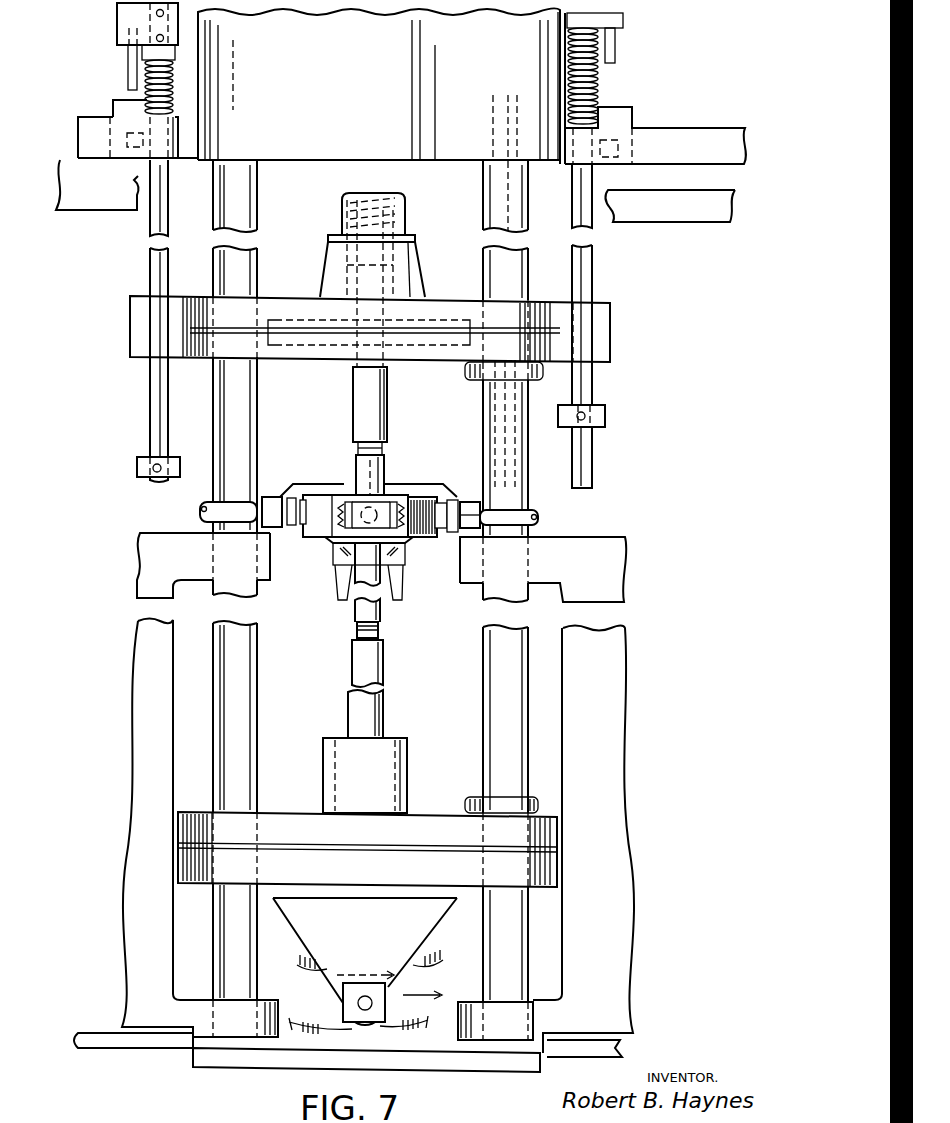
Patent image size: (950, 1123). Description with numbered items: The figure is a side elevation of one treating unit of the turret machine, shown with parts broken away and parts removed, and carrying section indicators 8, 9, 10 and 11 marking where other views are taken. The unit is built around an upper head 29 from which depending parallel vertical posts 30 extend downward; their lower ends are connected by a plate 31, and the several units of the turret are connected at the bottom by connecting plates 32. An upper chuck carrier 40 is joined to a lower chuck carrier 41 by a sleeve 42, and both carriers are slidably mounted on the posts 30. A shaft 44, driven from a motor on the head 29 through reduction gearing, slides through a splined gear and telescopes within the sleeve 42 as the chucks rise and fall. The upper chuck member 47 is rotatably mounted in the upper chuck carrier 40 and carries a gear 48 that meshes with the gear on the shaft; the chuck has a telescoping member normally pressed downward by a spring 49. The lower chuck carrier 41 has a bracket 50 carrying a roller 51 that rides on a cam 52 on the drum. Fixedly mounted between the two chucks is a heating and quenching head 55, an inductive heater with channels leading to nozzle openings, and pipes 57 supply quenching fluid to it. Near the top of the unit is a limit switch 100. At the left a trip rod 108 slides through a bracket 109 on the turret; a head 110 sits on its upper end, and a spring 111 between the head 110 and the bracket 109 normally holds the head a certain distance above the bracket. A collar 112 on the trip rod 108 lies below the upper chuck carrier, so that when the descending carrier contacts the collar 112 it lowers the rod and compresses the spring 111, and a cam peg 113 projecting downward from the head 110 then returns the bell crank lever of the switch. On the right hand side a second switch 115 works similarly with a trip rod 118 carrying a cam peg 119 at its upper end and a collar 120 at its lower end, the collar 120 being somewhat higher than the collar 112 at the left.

The section line 8- 8 is at (360, 471).
The section line 9- 9 is at (308, 453).
The section line 10- 10 is at (135, 278).
The section line 11- 11 is at (97, 113).
The upper head 29 is at (381, 86).
The vertical posts 30 is at (256, 277).
The plate 31 is at (273, 1057).
The connecting plates 32 is at (93, 1033).
The upper chuck carrier 40 is at (553, 354).
The lower chuck carrier 41 is at (534, 824).
The sleeve 42 is at (482, 718).
The shaft 44 is at (485, 205).
The upper chuck member 47 is at (390, 398).
The gear 48 is at (330, 346).
The spring 49 is at (347, 212).
The bracket 50 is at (420, 925).
The roller 51 is at (390, 993).
The cam 52 is at (317, 997).
The heating and quenching head 55 is at (417, 497).
The pipes 57 is at (200, 508).
The limit switch 100 is at (127, 108).
The trip rod 108 is at (152, 395).
The bracket 109 is at (97, 115).
The head 110 is at (117, 24).
The spring 111 is at (143, 78).
The collar 112 is at (137, 468).
The cam peg 113 is at (128, 55).
The second switch 115 is at (632, 116).
The trip rod 118 is at (590, 389).
The cam peg 119 is at (615, 52).
The collar 120 is at (600, 424).